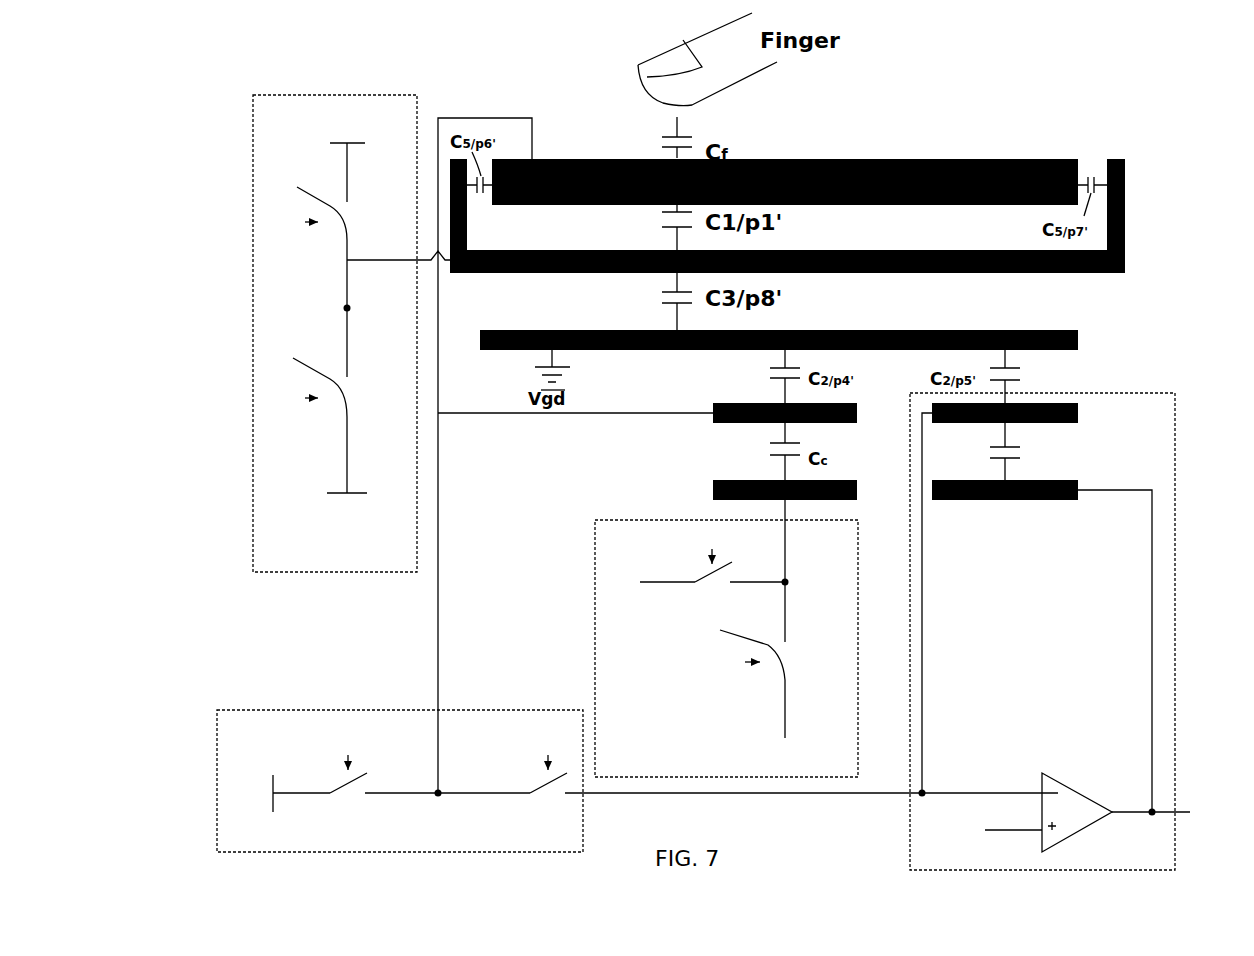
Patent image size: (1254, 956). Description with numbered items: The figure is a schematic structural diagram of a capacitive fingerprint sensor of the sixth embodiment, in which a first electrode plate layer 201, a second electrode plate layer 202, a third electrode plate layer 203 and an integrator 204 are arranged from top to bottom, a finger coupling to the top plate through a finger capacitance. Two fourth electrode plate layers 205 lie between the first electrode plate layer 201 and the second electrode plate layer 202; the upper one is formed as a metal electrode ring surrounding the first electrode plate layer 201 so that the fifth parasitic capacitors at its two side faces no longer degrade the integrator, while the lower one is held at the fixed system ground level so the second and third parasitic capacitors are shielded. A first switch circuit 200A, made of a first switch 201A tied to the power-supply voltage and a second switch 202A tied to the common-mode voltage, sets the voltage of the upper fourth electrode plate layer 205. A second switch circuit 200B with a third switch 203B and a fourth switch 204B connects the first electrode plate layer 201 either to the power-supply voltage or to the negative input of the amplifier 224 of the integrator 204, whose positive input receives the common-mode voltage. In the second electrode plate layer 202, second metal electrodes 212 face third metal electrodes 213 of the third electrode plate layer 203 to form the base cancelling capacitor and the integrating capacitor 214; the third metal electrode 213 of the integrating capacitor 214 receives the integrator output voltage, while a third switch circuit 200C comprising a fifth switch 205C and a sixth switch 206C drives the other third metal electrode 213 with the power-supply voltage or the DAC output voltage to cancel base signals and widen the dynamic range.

The first electrode plate layer 201 is at (1082, 159).
The fourth electrode plate layer 205 is at (1128, 249).
The second electrode plate layer 202 is at (1084, 399).
The second metal electrode 212 is at (932, 415).
The third metal electrode 213 is at (910, 514).
The integrating capacitor 214 is at (1026, 455).
The third electrode plate layer 203 is at (1082, 502).
The integrator 204 is at (1070, 631).
The amplifier 224 is at (1076, 803).
The first switch circuit 200A is at (281, 333).
The first switch 201A is at (313, 175).
The second switch 202A is at (311, 386).
The second switch circuit 200B is at (523, 746).
The third switch 203B is at (333, 789).
The fourth switch 204B is at (538, 789).
The third switch circuit 200C is at (690, 648).
The fifth switch 205C is at (697, 578).
The sixth switch 206C is at (728, 688).